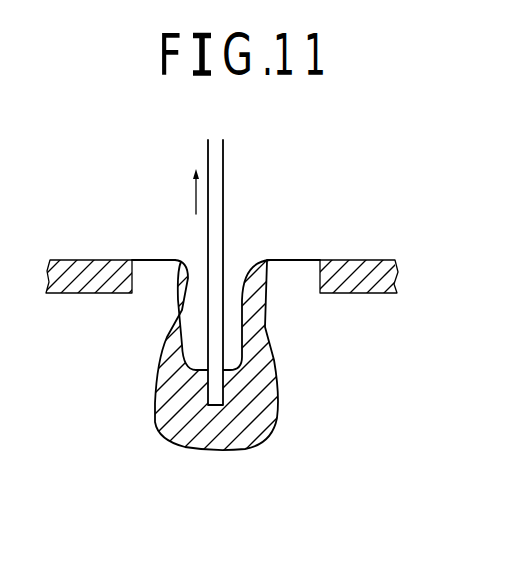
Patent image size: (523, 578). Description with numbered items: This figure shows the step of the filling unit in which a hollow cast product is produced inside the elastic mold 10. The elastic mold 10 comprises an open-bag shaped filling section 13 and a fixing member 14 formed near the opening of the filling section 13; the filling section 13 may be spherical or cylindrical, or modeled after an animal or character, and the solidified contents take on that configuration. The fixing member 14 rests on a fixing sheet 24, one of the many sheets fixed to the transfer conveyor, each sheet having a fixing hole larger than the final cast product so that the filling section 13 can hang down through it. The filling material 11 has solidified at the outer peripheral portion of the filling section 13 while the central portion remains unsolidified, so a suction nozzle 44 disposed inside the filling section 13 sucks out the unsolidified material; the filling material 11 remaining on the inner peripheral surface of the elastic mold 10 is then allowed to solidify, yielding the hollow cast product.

The elastic mold 10 is at (243, 328).
The filling material 11 is at (218, 437).
The filling section 13 is at (155, 428).
The fixing member 14 is at (294, 260).
The fixing sheet 24 is at (356, 295).
The suction nozzle 44 is at (218, 153).